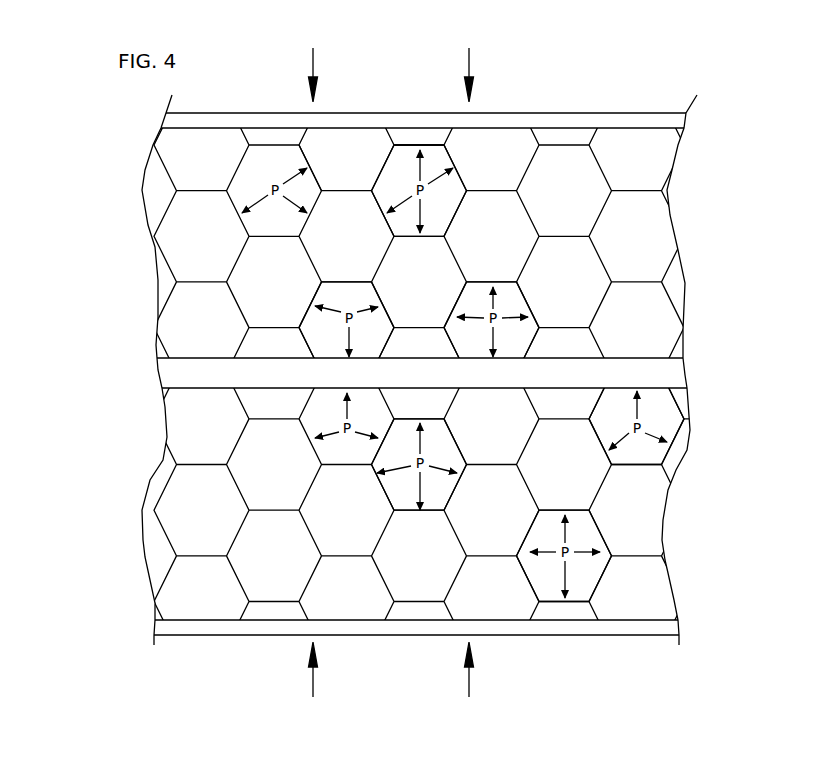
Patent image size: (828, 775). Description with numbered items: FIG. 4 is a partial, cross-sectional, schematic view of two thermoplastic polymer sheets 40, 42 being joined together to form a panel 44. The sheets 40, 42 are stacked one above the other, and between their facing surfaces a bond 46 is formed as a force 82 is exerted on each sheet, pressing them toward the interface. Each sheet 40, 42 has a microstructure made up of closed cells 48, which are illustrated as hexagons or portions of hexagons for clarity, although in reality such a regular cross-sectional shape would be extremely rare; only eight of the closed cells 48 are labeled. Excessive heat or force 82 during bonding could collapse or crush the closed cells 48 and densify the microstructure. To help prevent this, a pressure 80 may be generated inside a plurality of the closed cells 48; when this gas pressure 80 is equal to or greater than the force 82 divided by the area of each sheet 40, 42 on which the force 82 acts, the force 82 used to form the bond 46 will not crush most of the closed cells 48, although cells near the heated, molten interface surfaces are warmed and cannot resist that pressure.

The thermoplastic polymer sheet 40 is at (124, 128).
The thermoplastic polymer sheet 42 is at (124, 395).
The panel 44 is at (76, 113).
The bond 46 is at (125, 357).
The closed cells 48 is at (288, 273).
The pressure 80 is at (290, 177).
The force 82 is at (511, 697).